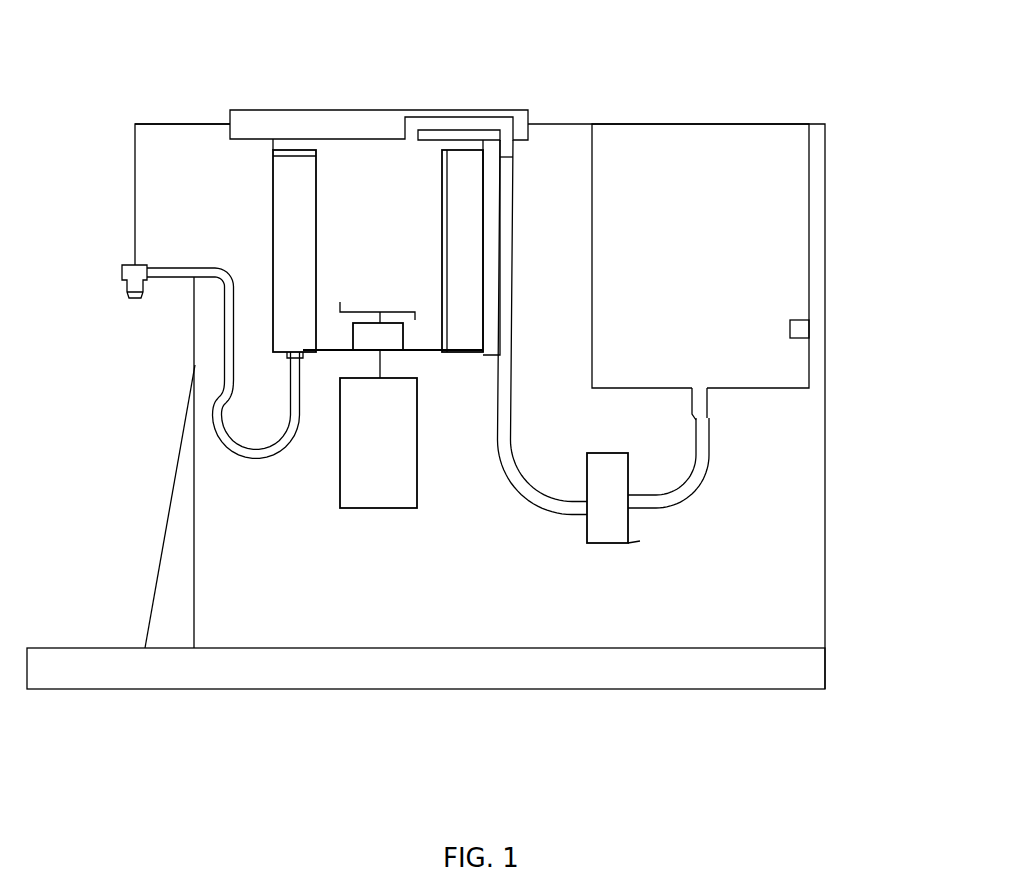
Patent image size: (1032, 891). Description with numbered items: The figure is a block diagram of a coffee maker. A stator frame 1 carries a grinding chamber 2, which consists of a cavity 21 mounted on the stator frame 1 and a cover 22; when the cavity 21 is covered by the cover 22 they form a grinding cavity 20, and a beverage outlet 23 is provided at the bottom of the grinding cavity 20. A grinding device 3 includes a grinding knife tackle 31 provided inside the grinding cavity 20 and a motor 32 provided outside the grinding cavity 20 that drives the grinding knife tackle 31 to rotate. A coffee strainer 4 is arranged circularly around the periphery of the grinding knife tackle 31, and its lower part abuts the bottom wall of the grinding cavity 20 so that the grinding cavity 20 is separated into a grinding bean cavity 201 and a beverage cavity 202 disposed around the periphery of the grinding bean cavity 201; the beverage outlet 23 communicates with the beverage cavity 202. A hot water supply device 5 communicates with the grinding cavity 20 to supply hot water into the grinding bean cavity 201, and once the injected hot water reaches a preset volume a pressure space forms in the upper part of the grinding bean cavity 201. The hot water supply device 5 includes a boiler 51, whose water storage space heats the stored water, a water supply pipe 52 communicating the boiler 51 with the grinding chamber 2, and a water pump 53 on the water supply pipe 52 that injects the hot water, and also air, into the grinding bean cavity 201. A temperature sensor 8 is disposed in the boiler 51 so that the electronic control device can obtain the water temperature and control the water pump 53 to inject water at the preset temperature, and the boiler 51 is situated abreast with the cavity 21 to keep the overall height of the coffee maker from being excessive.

The stator frame 1 is at (790, 665).
The grinding chamber 2 is at (70, 167).
The grinding device 3 is at (533, 778).
The coffee strainer 4 is at (316, 177).
The hot water supply device 5 is at (898, 400).
The temperature sensor 8 is at (800, 321).
The grinding cavity 20 is at (603, 38).
The cavity 21 is at (272, 210).
The cover 22 is at (262, 130).
The beverage outlet 23 is at (302, 368).
The grinding knife tackle 31 is at (405, 332).
The motor 32 is at (383, 497).
The boiler 51 is at (748, 390).
The water supply pipe 52 is at (690, 508).
The water pump 53 is at (632, 541).
The grinding bean cavity 201 is at (400, 225).
The beverage cavity 202 is at (465, 225).